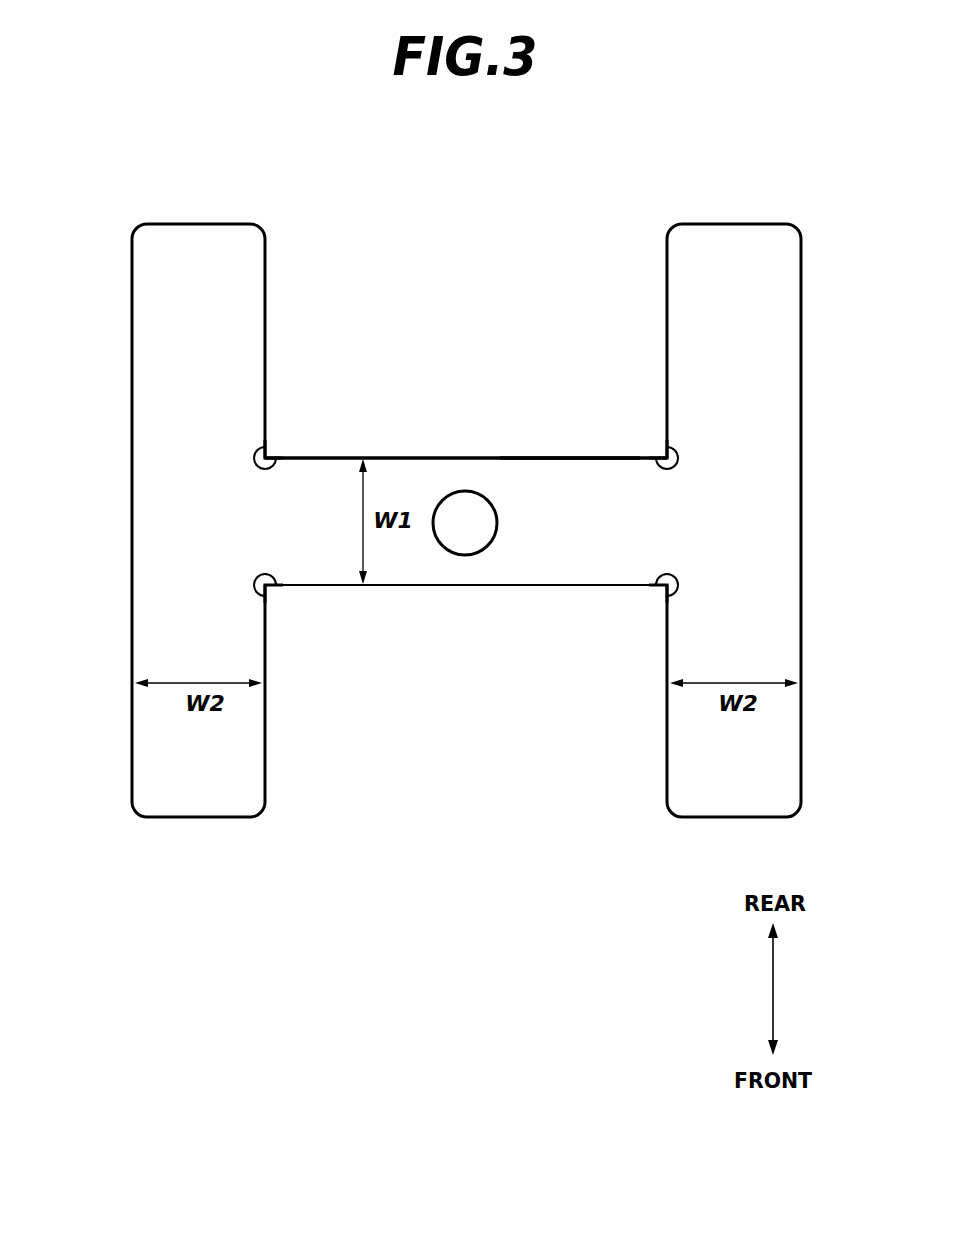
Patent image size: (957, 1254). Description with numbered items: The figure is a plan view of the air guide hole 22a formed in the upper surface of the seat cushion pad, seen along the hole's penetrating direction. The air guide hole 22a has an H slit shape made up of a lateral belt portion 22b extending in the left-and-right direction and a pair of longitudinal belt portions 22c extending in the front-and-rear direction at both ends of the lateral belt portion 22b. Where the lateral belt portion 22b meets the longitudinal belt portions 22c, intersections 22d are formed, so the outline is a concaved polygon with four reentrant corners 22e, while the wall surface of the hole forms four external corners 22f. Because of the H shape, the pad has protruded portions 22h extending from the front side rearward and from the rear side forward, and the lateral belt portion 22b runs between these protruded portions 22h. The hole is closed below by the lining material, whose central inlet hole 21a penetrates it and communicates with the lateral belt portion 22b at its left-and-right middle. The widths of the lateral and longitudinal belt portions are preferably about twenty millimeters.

The inlet hole 21a is at (463, 508).
The air guide hole 22a is at (462, 485).
The lateral belt portion 22b is at (413, 555).
The longitudinal belt portion 22c is at (163, 347).
The intersection 22d is at (162, 515).
The reentrant corner 22e is at (253, 463).
The external corner 22f is at (270, 453).
The protruded portion 22h is at (532, 447).